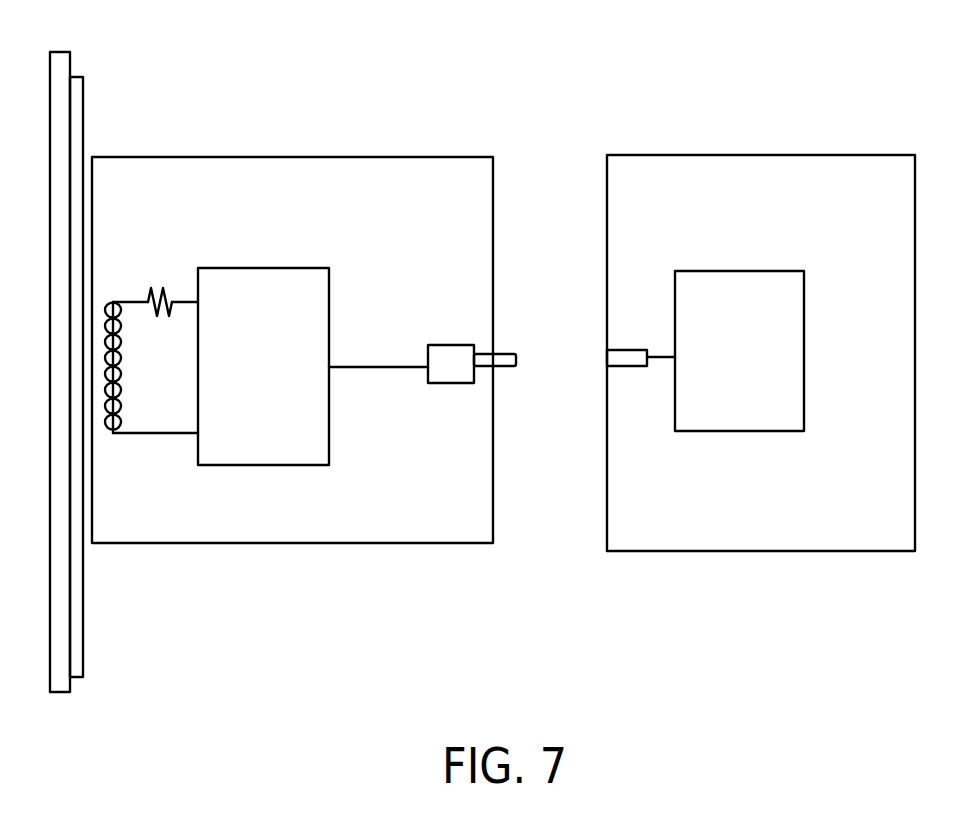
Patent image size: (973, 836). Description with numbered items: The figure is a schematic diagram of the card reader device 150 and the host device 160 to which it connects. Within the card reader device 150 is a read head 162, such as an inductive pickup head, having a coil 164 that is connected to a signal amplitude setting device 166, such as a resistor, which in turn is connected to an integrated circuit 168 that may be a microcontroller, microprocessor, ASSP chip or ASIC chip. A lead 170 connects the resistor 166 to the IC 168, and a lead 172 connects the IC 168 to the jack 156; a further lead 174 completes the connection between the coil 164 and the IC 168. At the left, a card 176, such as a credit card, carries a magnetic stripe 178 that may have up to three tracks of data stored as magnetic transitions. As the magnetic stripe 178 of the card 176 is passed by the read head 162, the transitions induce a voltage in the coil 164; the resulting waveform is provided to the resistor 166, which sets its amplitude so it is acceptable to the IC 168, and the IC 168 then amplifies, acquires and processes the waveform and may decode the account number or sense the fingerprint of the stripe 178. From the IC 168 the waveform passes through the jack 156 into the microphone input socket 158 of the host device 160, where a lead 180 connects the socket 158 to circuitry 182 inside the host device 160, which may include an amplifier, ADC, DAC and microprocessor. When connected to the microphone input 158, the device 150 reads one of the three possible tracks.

The card reader device 150 is at (267, 104).
The jack 156 is at (453, 360).
The microphone input socket 158 is at (630, 348).
The host device 160 is at (750, 117).
The read head 162 is at (142, 323).
The coil 164 is at (122, 370).
The signal amplitude setting device 166 is at (168, 288).
The integrated circuit 168 is at (268, 274).
The lead 170 is at (186, 300).
The lead 172 is at (376, 370).
The lead wire 174 is at (149, 437).
The card 176 is at (56, 690).
The magnetic stripe 178 is at (83, 108).
The lead 180 is at (660, 360).
The circuitry 182 is at (720, 431).